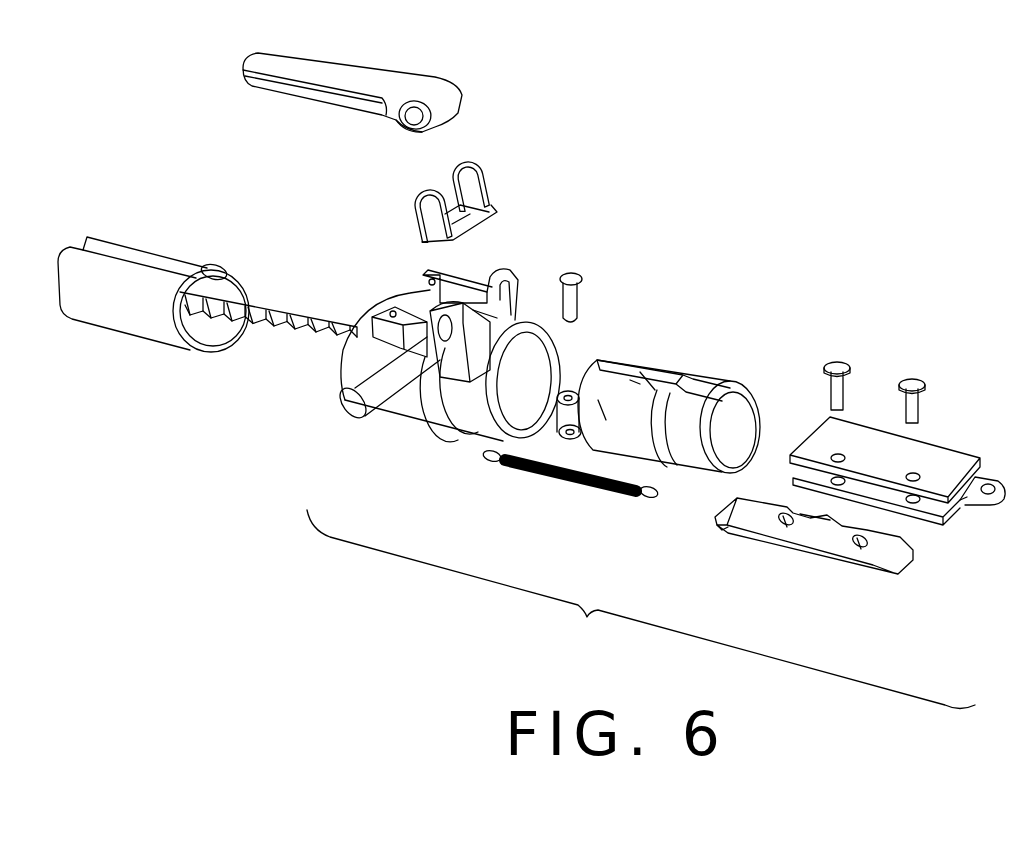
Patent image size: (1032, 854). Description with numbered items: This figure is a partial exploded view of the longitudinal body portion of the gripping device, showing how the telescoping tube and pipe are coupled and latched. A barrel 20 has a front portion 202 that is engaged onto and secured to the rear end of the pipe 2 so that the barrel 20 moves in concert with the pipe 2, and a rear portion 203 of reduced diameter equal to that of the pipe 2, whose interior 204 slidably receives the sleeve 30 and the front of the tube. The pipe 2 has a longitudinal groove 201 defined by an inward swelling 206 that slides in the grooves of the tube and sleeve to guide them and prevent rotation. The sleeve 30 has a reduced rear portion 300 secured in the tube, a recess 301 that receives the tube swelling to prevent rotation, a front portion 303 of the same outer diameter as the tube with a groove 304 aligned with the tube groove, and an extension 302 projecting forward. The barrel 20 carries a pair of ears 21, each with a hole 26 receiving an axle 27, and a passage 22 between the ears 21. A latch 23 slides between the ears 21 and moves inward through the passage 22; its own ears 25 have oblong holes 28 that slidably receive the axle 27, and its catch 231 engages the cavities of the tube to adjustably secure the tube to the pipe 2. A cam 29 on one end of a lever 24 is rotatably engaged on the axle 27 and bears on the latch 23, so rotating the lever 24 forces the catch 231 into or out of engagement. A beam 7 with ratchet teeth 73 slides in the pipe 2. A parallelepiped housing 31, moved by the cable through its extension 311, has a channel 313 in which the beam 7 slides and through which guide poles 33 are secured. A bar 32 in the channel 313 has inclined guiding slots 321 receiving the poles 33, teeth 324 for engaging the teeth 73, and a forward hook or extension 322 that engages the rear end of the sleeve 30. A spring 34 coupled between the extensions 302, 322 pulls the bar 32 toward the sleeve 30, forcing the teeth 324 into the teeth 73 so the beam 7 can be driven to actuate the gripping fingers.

The pipe 2 is at (160, 294).
The longitudinal groove 201 is at (160, 260).
The swelling 206 is at (219, 268).
The beam 7 is at (268, 334).
The teeth 73 is at (270, 325).
The lever 24 is at (377, 78).
The cam 29 is at (440, 126).
The latch 23 is at (445, 164).
The ears 25 is at (414, 205).
The oblong hole 28 is at (465, 170).
The catch 231 is at (458, 230).
The hole 26 is at (510, 277).
The ears 21 is at (517, 231).
The barrel 20 is at (446, 344).
The front portion 202 is at (353, 360).
The axle 27 is at (347, 410).
The rear portion 203 is at (463, 412).
The interior 204 is at (507, 400).
The passage 22 is at (545, 352).
The sleeve 30 is at (659, 463).
The extension 302 is at (593, 377).
The recess 301 is at (713, 397).
The rear portion 300 is at (690, 455).
The front portion 303 is at (607, 433).
The groove 304 is at (638, 378).
The spring 34 is at (550, 478).
The housing 31 is at (900, 505).
The channel 313 is at (937, 507).
The extension 311 is at (983, 502).
The guide poles 33 is at (833, 362).
The bar 32 is at (796, 578).
The guiding slots 321 is at (782, 528).
The extension 322 is at (720, 518).
The teeth 324 is at (817, 518).